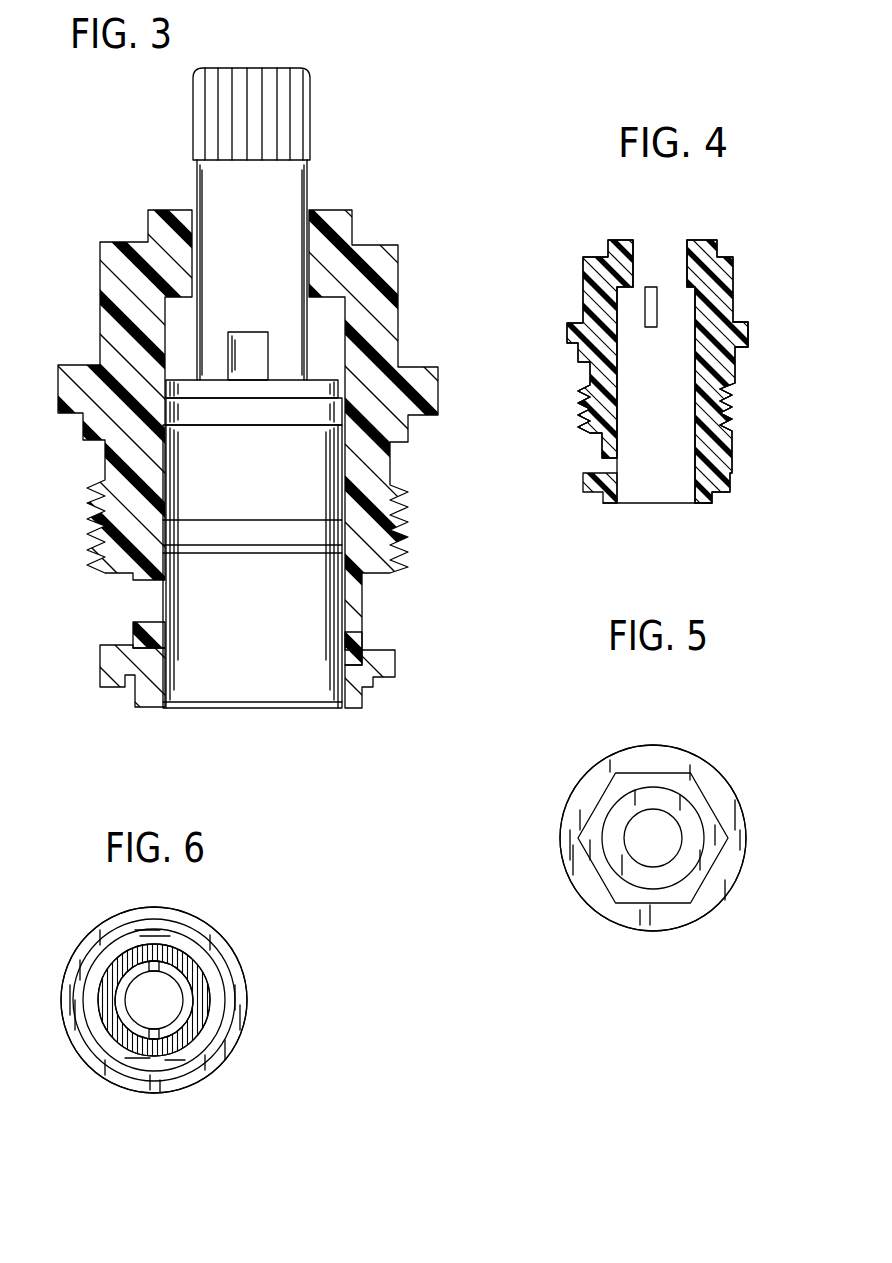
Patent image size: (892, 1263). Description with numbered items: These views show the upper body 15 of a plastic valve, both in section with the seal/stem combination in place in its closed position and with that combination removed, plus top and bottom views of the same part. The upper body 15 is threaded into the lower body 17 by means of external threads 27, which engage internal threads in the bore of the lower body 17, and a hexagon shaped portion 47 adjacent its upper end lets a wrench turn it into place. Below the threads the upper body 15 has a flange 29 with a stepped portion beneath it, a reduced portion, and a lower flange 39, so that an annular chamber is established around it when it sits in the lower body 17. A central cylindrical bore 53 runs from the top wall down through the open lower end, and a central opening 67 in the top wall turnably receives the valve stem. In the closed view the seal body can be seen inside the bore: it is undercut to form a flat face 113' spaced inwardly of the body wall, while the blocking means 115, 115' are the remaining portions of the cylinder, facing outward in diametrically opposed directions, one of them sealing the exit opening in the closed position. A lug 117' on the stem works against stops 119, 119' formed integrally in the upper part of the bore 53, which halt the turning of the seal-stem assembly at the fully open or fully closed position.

In FIG. 4, the upper body 15 is at (556, 313).
In FIG. 5, the upper body 15 is at (675, 937).
In FIG. 6, the upper body 15 is at (230, 1075).
In FIG. 3, the lower body 17 is at (108, 331).
In FIG. 4, the lower body 17 is at (720, 300).
In FIG. 4, the external threads 27 is at (733, 403).
In FIG. 4, the flange 29 is at (748, 331).
In FIG. 3, the flange 39 is at (392, 686).
In FIG. 4, the flange 39 is at (726, 480).
In FIG. 6, the flange 39 is at (101, 1070).
In FIG. 5, the hexagon shaped portion 47 is at (672, 838).
In FIG. 4, the cylindrical bore 53 is at (700, 440).
In FIG. 4, the central opening 67 is at (675, 267).
In FIG. 5, the central opening 67 is at (650, 815).
In FIG. 6, the central opening 67 is at (180, 1007).
In FIG. 3, the undercut face 113' is at (252, 566).
In FIG. 3, the blocking means 115 is at (114, 635).
In FIG. 3, the blocking means 115' is at (397, 643).
In FIG. 3, the lug 117' is at (251, 224).
In FIG. 4, the stop 119 is at (653, 329).
In FIG. 6, the stop 119 is at (222, 945).
In FIG. 6, the stop 119' is at (179, 1095).